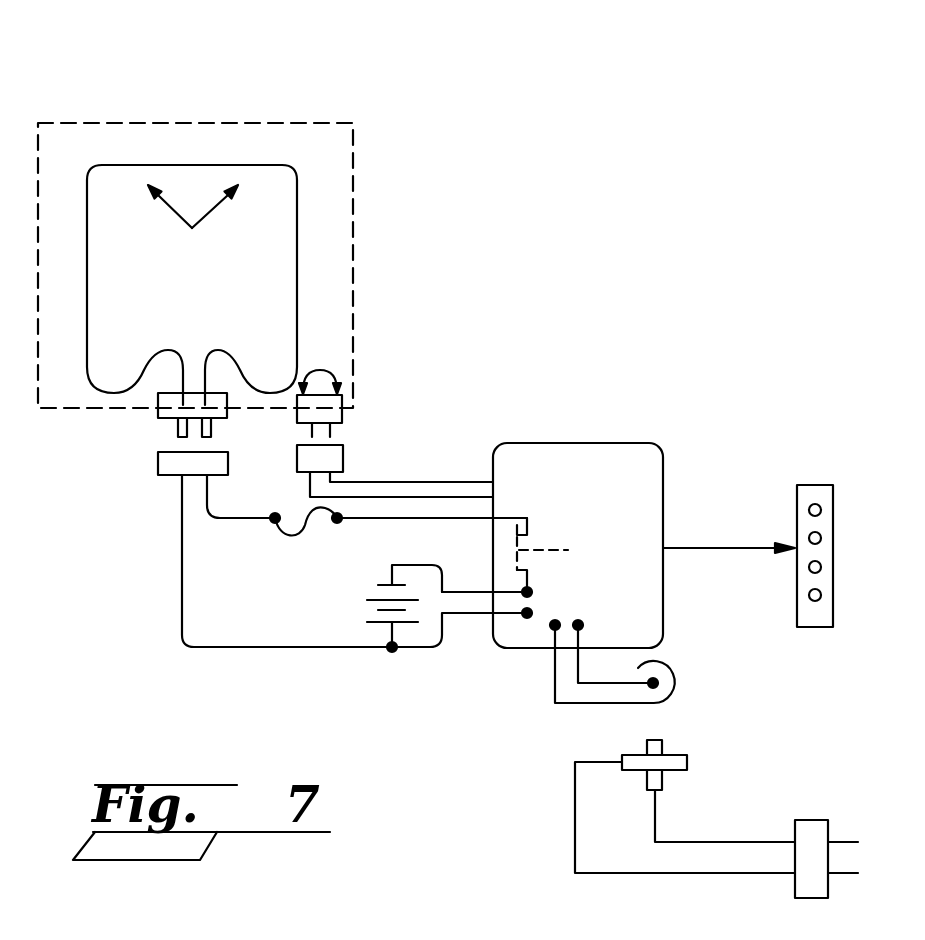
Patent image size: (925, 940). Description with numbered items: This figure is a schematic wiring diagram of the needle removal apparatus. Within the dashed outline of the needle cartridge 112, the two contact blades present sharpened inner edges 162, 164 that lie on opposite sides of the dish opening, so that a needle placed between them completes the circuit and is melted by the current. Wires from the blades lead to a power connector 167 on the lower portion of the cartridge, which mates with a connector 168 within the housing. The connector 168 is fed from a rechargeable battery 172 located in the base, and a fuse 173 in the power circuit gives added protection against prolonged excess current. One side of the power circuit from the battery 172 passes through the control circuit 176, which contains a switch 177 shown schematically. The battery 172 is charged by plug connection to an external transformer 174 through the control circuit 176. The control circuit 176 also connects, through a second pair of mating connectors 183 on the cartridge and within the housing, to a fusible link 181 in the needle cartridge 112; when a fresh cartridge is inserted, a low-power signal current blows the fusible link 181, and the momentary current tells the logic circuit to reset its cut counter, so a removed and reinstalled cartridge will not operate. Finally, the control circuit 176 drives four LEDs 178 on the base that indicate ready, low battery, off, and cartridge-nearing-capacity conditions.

The needle cartridge 112 is at (78, 120).
The sharpened inner edge 164 is at (163, 165).
The sharpened inner edge 162 is at (243, 165).
The power connector 167 is at (158, 412).
The connector 168 is at (158, 466).
The fuse 173 is at (296, 537).
The rechargeable battery 172 is at (353, 598).
The fusible link 181 is at (317, 370).
The second pair of mating connectors 183 is at (335, 433).
The control circuit 176 is at (663, 468).
The switch 177 is at (532, 550).
The LEDs 178 is at (833, 507).
The external transformer 174 is at (817, 822).